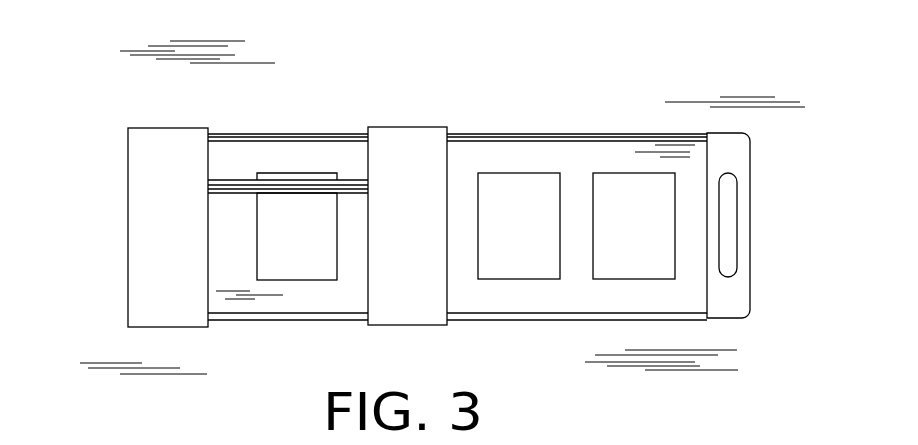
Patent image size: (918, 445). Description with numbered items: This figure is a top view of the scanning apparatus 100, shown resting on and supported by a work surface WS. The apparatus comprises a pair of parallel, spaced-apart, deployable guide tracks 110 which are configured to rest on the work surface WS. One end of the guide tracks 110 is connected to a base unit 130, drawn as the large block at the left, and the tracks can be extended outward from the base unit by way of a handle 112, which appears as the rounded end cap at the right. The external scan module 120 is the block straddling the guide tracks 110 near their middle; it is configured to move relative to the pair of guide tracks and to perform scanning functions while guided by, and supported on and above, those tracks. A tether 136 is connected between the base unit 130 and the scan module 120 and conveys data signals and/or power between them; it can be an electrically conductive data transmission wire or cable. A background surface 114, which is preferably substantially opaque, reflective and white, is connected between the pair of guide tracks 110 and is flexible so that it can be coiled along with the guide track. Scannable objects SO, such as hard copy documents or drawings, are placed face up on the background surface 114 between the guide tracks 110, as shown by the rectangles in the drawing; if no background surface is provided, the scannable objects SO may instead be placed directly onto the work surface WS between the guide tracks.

The scanning apparatus 100 is at (622, 43).
The guide tracks 110 is at (525, 136).
The handle 112 is at (740, 153).
The background surface 114 is at (597, 165).
The scan module 120 is at (410, 134).
The base unit 130 is at (138, 236).
The tether 136 is at (300, 190).
The scannable objects SO is at (270, 246).
The work surface WS is at (247, 95).